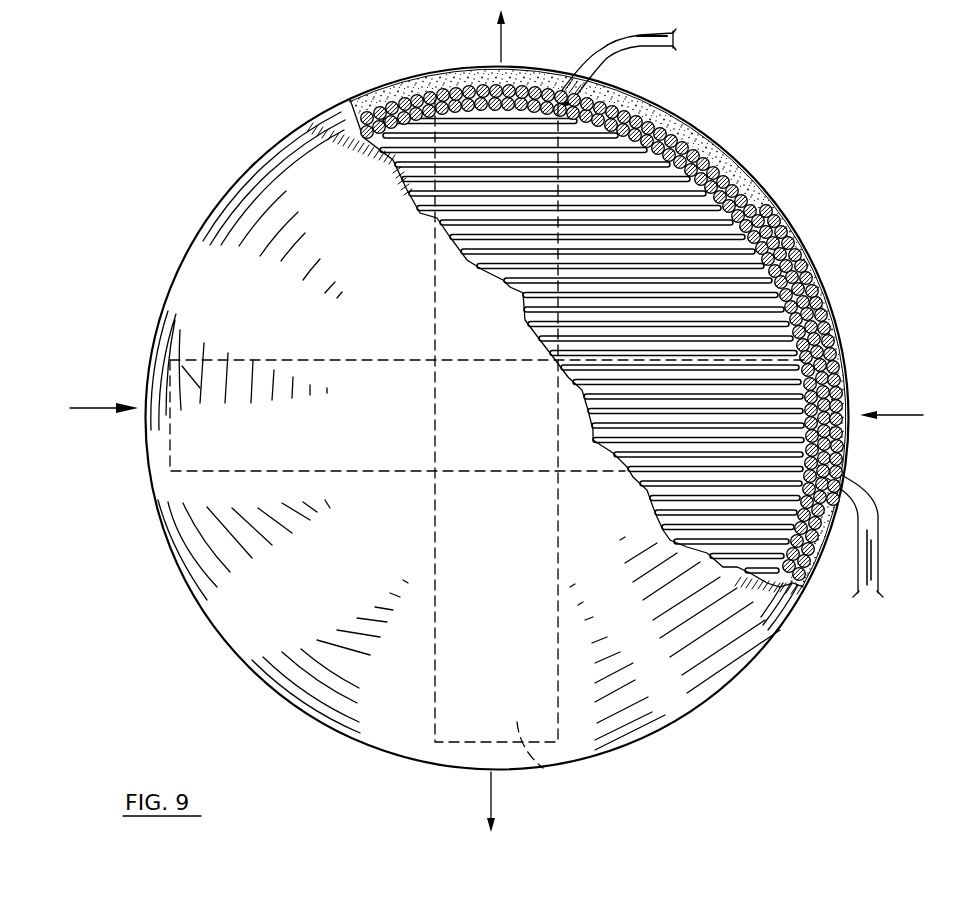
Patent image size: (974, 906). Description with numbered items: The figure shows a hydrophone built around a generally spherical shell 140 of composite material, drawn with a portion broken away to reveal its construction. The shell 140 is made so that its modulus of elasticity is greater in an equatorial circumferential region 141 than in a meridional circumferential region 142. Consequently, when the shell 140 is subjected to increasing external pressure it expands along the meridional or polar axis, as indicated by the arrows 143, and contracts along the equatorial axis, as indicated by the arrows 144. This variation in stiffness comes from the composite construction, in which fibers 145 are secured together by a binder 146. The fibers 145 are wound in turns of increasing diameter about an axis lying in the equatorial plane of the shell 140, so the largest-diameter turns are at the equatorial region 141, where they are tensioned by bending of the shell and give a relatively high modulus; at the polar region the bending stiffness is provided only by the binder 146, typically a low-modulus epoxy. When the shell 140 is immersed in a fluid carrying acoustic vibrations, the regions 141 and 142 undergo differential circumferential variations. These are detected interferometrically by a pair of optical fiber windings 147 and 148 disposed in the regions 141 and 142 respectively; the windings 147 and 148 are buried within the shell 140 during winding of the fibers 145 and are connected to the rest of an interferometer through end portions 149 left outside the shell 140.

The shell 140 is at (673, 690).
The equatorial circumferential region 141 is at (851, 380).
The meridional circumferential region 142 is at (545, 93).
The arrows 143 is at (500, 54).
The arrows 144 is at (100, 410).
The fibers 145 is at (802, 252).
The binder 146 is at (717, 152).
The optical fiber winding 147 is at (177, 357).
The optical fiber winding 148 is at (543, 768).
The end portions 149 is at (664, 48).